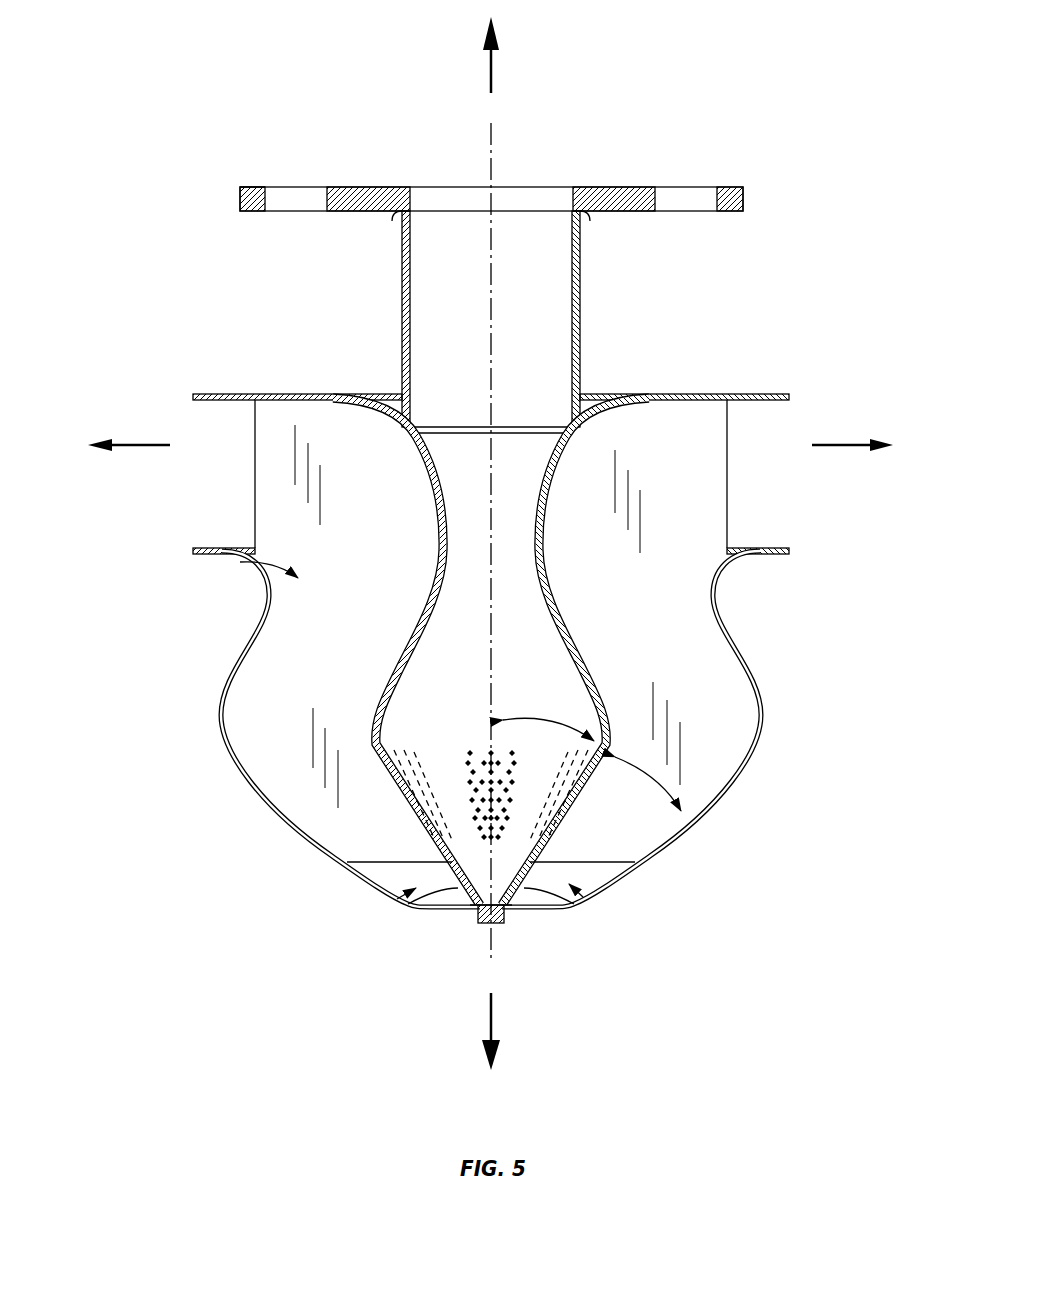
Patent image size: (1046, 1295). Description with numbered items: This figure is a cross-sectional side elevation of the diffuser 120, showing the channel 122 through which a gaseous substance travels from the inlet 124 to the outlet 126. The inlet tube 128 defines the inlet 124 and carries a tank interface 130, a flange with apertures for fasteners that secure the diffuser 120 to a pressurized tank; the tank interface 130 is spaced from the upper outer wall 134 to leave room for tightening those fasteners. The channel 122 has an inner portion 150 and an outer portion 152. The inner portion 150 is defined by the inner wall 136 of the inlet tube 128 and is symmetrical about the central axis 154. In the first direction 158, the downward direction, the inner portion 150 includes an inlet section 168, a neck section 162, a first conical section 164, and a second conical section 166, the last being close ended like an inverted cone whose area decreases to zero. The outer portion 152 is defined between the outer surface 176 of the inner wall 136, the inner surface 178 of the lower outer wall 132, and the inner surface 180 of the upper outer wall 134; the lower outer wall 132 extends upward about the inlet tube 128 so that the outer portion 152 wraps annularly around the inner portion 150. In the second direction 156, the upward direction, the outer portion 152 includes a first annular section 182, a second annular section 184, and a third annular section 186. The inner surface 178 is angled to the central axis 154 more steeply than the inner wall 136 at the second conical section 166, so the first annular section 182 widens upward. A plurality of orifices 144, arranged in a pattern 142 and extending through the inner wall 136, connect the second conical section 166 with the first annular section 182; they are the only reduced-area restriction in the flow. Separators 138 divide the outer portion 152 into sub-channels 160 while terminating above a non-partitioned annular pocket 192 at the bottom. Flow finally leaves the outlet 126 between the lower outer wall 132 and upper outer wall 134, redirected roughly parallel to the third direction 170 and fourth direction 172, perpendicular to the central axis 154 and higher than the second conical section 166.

The diffuser 120 is at (278, 825).
The channel 122 is at (547, 187).
The inlet 124 is at (452, 210).
The outlet 126 is at (165, 494).
The inlet tube 128 is at (582, 272).
The tank interface 130 is at (253, 187).
The lower outer wall 132 is at (704, 820).
The upper outer wall 134 is at (612, 394).
The inner wall 136 is at (552, 517).
The separators 138 is at (283, 413).
The pattern 142 is at (545, 754).
The orifices 144 is at (482, 822).
The inner portion 150 is at (410, 298).
The outer portion 152 is at (240, 750).
The central axis 154 is at (493, 132).
The second direction 156 is at (491, 65).
The first direction 158 is at (492, 1013).
The sub-channels 160 is at (255, 555).
The neck section 162 is at (560, 571).
The first conical section 164 is at (716, 582).
The second conical section 166 is at (575, 813).
The inlet section 168 is at (586, 318).
The third direction 170 is at (157, 445).
The fourth direction 172 is at (847, 447).
The outer surface 176 is at (570, 615).
The inner surface 178 is at (740, 657).
The inner surface 180 is at (696, 400).
The first annular section 182 is at (338, 814).
The second annular section 184 is at (260, 703).
The third annular section 186 is at (306, 438).
The non-partitioned annular pocket 192 is at (388, 903).